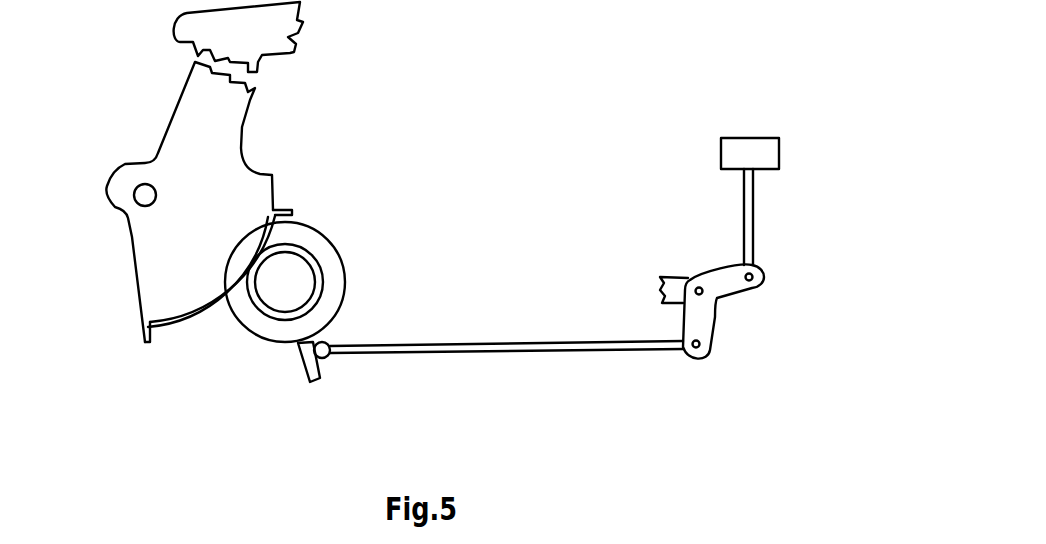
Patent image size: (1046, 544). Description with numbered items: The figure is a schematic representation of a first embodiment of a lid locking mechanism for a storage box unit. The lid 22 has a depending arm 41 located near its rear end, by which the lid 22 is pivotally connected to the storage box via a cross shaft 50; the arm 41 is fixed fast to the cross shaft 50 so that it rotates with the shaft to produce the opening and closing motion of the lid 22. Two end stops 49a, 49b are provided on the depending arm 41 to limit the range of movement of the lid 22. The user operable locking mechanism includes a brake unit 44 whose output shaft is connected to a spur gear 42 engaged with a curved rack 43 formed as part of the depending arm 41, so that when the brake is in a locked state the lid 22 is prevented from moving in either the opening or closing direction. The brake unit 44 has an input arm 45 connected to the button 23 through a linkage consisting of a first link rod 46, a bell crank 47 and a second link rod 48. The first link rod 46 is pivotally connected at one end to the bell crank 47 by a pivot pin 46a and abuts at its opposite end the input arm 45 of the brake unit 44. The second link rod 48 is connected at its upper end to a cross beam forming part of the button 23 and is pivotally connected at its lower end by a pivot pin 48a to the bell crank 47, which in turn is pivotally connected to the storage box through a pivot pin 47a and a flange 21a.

The lid 22 is at (173, 32).
The depending arm 41 is at (278, 188).
The cross shaft 50 is at (132, 198).
The end stop 49a is at (293, 212).
The curved rack 43 is at (202, 318).
The end stop 49b is at (144, 343).
The brake unit 44 is at (346, 296).
The spur gear 42 is at (279, 318).
The input arm 45 is at (315, 380).
The first link rod 46 is at (500, 350).
The flange 21a is at (670, 277).
The bell crank 47 is at (695, 362).
The pivot pin 47a is at (703, 293).
The pivot pin 48a is at (755, 277).
The pivot pin 46a is at (700, 347).
The second link rod 48 is at (744, 217).
The button 23 is at (772, 167).